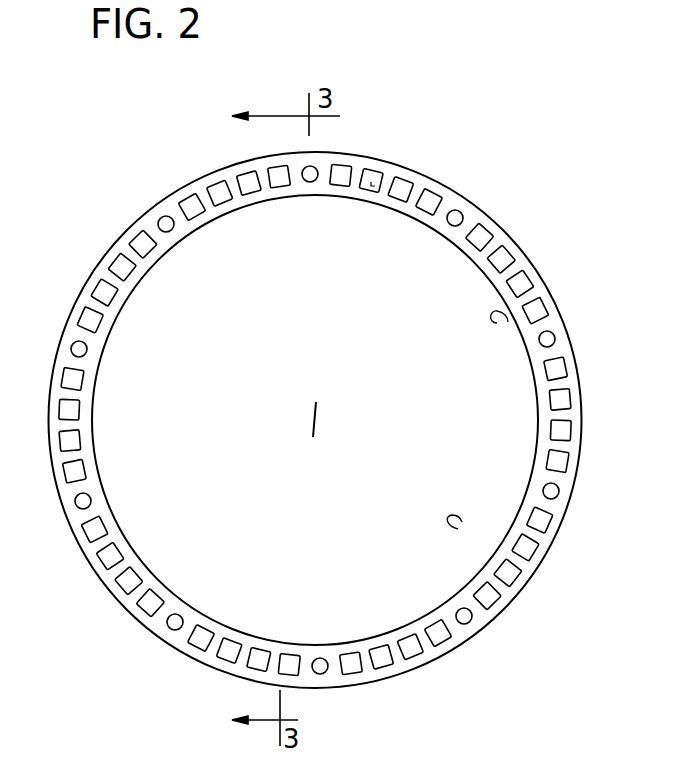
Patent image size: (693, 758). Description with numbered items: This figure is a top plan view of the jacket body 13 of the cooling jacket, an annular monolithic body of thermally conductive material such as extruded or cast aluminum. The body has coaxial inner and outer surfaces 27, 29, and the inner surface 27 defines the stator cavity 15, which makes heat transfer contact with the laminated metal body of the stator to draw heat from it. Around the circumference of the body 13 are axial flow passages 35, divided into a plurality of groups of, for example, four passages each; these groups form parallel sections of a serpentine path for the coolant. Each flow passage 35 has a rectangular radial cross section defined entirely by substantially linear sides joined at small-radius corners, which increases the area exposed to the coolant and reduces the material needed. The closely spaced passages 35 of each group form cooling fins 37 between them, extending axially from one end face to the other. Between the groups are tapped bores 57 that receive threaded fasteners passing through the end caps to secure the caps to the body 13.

The jacket body 13 is at (115, 223).
The stator cavity 15 is at (458, 529).
The inner surface 27 is at (497, 323).
The outer surface 29 is at (582, 448).
The flow passage 35 is at (373, 183).
The cooling fin 37 is at (207, 197).
The tapped bore 57 is at (462, 217).